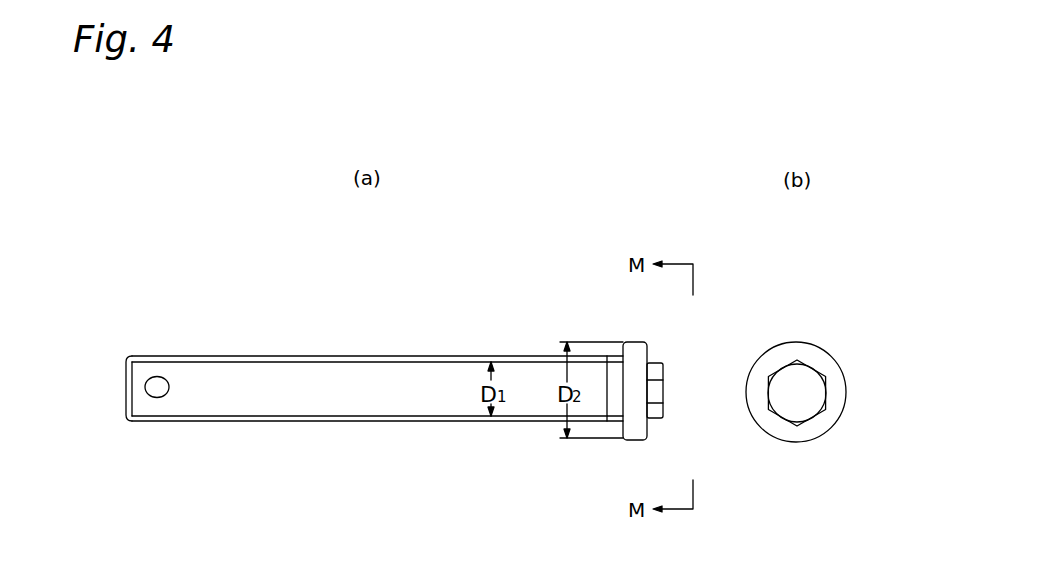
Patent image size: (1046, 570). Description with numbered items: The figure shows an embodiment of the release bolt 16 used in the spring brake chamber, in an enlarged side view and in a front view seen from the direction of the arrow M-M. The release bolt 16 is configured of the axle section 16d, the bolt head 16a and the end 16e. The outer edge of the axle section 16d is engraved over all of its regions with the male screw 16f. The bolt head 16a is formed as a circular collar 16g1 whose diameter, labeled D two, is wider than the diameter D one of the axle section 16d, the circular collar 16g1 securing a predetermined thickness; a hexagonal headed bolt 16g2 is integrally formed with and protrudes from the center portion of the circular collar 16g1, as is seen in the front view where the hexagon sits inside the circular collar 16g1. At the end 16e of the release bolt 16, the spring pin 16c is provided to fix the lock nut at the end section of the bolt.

The release bolt 16 is at (384, 263).
The bolt head 16a is at (636, 340).
The spring pin 16c is at (160, 393).
The axle section 16d is at (273, 393).
The end 16e is at (135, 393).
The male screw 16f is at (345, 421).
The circular collar 16g1 is at (837, 513).
The hexagonal headed bolt 16g2 is at (655, 391).